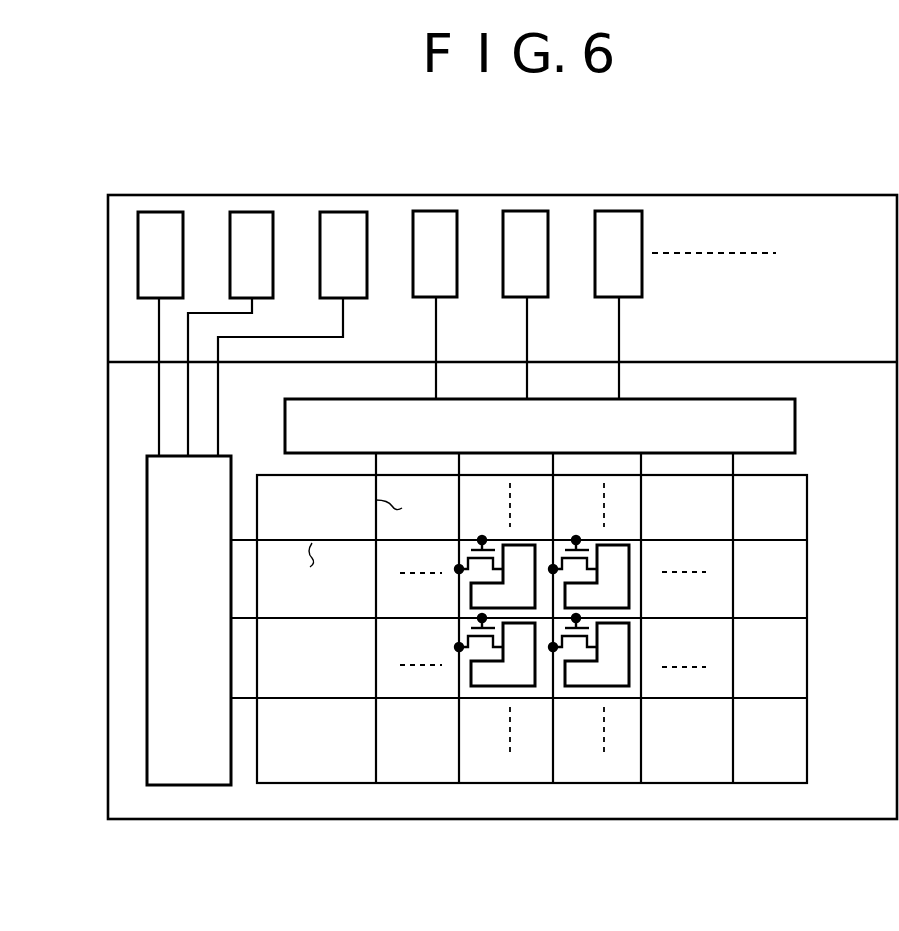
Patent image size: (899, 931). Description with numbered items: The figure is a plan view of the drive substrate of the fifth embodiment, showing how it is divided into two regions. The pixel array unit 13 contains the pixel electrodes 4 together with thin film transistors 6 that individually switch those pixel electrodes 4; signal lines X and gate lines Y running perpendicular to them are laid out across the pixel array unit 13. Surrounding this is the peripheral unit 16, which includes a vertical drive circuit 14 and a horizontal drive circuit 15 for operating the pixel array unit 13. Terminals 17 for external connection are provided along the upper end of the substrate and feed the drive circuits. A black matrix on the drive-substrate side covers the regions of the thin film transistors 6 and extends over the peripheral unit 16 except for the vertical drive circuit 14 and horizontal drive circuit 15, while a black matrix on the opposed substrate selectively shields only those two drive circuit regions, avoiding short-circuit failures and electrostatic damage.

The pixel electrode 4 is at (613, 673).
The thin film transistor 6 is at (483, 645).
The pixel array unit 13 is at (425, 742).
The vertical drive circuit 14 is at (147, 717).
The horizontal drive circuit 15 is at (795, 426).
The peripheral unit 16 is at (190, 790).
The terminals 17 is at (645, 183).